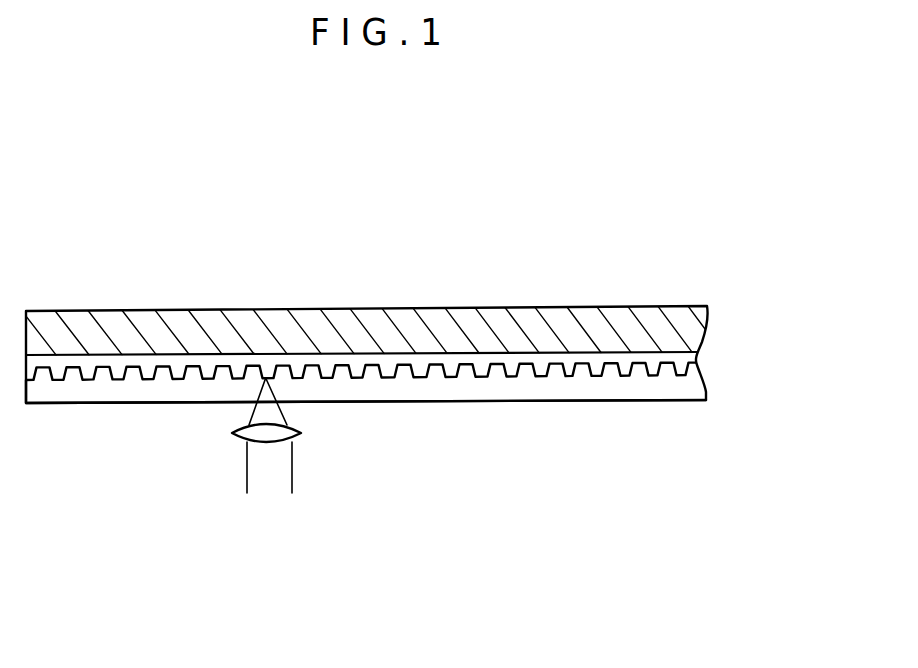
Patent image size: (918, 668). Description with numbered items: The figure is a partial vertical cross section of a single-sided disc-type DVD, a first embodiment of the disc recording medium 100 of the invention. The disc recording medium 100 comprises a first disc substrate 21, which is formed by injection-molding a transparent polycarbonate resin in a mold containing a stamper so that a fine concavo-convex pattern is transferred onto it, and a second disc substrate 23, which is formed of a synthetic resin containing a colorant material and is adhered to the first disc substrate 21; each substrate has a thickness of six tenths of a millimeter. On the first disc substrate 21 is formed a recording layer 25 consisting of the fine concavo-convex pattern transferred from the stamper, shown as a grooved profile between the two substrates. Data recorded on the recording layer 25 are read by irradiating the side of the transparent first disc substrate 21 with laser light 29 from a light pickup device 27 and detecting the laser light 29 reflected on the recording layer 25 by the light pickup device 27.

The disc recording medium 100 is at (430, 261).
The first disc substrate 21 is at (88, 392).
The second disc substrate 23 is at (92, 312).
The recording layer 25 is at (553, 366).
The light pickup device 27 is at (230, 447).
The laser light 29 is at (272, 395).